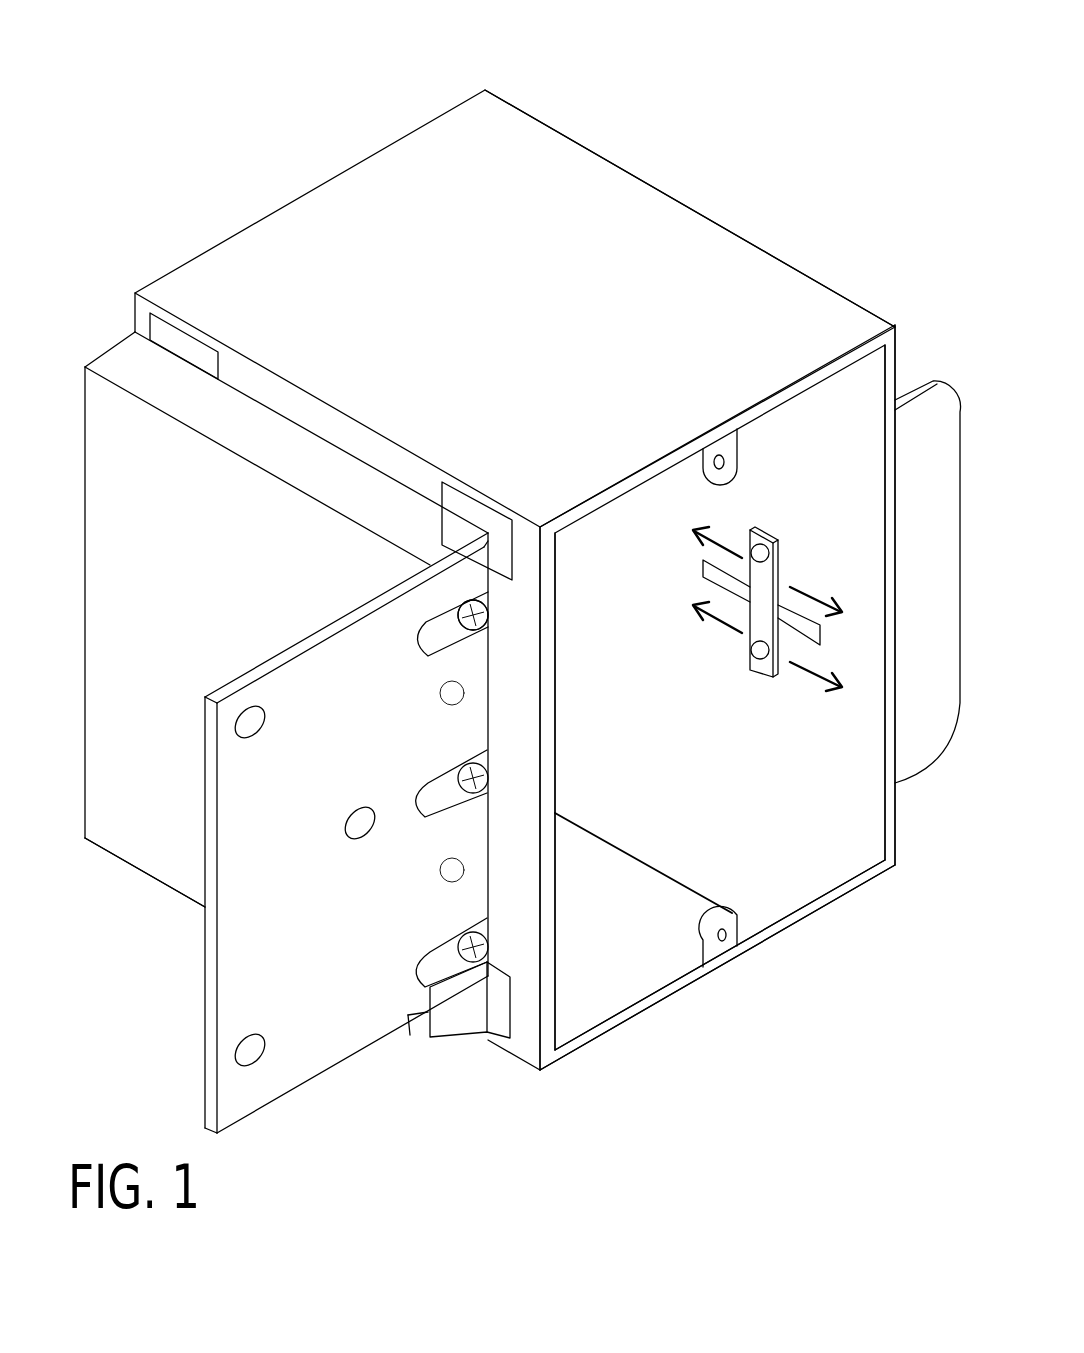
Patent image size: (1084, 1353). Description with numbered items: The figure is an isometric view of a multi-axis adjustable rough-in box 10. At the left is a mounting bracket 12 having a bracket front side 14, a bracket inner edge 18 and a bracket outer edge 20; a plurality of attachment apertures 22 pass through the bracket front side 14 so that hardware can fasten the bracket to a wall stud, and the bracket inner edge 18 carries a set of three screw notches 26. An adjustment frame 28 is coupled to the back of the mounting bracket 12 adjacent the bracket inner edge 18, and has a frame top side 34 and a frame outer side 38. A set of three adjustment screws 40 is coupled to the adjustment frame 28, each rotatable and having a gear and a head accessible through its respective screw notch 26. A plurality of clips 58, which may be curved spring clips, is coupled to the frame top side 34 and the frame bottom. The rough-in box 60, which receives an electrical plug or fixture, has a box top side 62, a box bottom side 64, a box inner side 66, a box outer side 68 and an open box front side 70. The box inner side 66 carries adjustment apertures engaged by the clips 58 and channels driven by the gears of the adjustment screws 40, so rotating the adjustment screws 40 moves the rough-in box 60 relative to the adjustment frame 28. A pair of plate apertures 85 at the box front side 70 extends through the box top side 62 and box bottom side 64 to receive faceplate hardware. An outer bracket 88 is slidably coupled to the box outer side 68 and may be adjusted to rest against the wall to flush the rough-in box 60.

The multi-axis adjustable rough-in box 10 is at (816, 143).
The mounting bracket 12 is at (267, 1101).
The bracket front side 14 is at (330, 1037).
The bracket inner edge 18 is at (488, 853).
The bracket outer edge 20 is at (212, 1060).
The attachment apertures 22 is at (352, 838).
The screw notches 26 is at (432, 653).
The adjustment frame 28 is at (142, 872).
The frame top side 34 is at (130, 373).
The frame outer side 38 is at (108, 565).
The adjustment screws 40 is at (485, 610).
The clips 58 is at (473, 527).
The rough-in box 60 is at (855, 305).
The box top side 62 is at (615, 177).
The box bottom side 64 is at (650, 1003).
The box inner side 66 is at (540, 927).
The box outer side 68 is at (870, 778).
The open box front side 70 is at (720, 952).
The plate apertures 85 is at (722, 464).
The outer bracket 88 is at (935, 415).